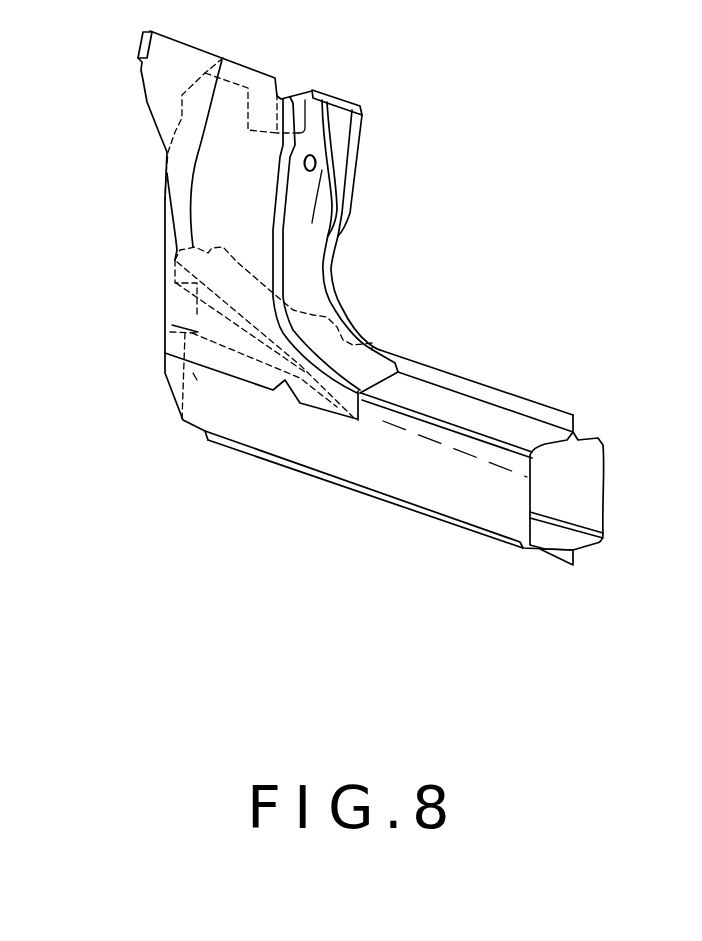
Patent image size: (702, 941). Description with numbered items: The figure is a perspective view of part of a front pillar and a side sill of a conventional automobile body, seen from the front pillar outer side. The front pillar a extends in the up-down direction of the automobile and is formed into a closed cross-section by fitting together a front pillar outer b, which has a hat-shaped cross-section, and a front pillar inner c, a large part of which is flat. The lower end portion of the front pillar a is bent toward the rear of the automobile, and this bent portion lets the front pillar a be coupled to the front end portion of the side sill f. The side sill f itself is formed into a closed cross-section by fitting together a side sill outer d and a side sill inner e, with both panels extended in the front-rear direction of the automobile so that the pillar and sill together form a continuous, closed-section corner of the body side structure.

The front pillar a is at (100, 376).
The front pillar outer b is at (152, 124).
The front pillar inner c is at (314, 90).
The side sill outer d is at (345, 460).
The side sill inner e is at (605, 488).
The side sill f is at (410, 547).